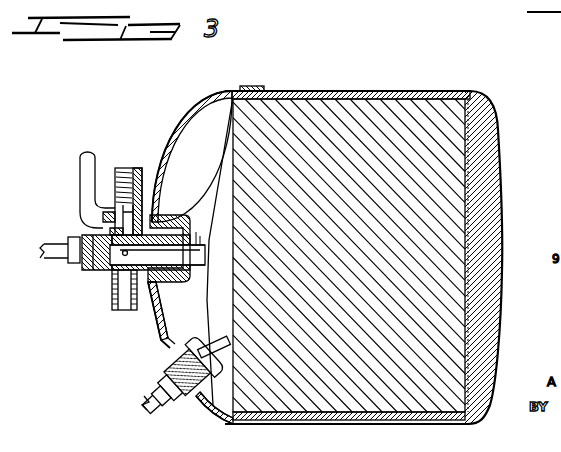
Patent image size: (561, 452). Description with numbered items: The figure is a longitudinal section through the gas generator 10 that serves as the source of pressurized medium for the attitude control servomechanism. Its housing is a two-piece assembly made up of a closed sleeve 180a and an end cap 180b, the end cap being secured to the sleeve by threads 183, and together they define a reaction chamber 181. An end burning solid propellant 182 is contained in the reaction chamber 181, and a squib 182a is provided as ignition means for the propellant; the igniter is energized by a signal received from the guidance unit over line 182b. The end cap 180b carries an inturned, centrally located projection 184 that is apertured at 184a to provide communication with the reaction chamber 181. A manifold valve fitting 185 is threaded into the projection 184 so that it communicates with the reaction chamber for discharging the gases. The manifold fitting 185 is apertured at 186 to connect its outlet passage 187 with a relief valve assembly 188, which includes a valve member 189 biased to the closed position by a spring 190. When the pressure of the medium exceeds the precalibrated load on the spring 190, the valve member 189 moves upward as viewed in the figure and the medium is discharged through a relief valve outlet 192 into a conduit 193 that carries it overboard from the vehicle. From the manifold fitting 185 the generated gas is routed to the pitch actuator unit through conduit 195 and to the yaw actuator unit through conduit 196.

The propellant tank assembly 10 is at (422, 75).
The closed sleeve 180a is at (312, 91).
The end cap 180b is at (218, 90).
The reaction chamber 181 is at (212, 143).
The end burning solid propellant 182 is at (362, 100).
The squib 182a is at (194, 398).
The line 182b is at (129, 423).
The threads 183 is at (254, 87).
The inturned centrally located projection 184 is at (170, 224).
The aperture 184a is at (203, 232).
The manifold valve fitting 185 is at (96, 279).
The aperture 186 is at (160, 266).
The outlet passage 187 is at (74, 265).
The relief valve assembly 188 is at (143, 161).
The valve member 189 is at (116, 236).
The spring 190 is at (120, 200).
The relief valve outlet 192 is at (112, 214).
The conduit 193 is at (88, 160).
The conduit 195 is at (114, 300).
The conduit 196 is at (43, 246).